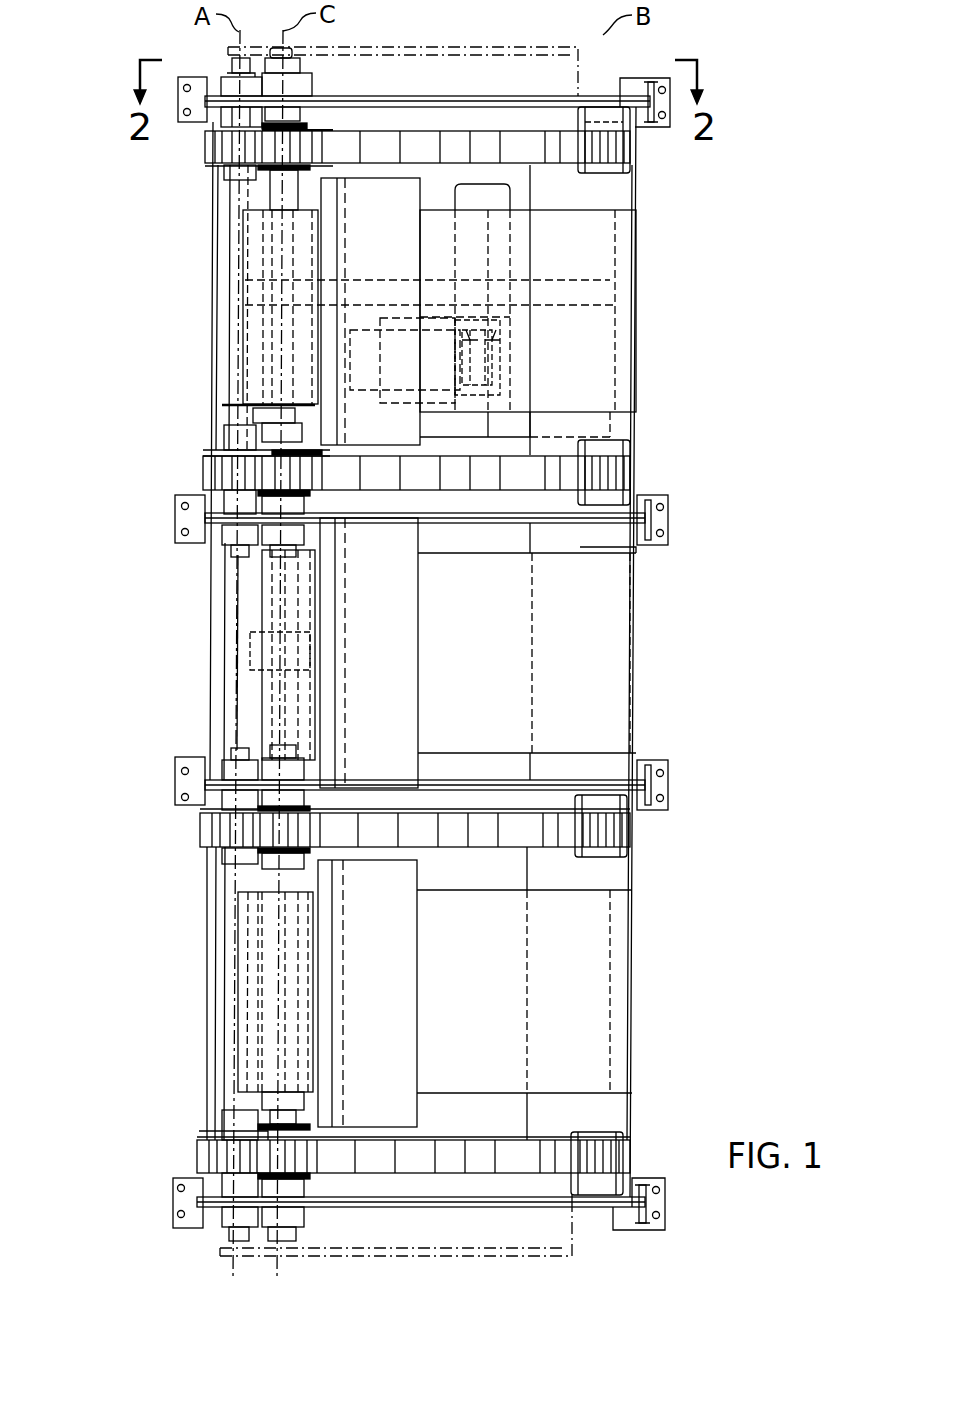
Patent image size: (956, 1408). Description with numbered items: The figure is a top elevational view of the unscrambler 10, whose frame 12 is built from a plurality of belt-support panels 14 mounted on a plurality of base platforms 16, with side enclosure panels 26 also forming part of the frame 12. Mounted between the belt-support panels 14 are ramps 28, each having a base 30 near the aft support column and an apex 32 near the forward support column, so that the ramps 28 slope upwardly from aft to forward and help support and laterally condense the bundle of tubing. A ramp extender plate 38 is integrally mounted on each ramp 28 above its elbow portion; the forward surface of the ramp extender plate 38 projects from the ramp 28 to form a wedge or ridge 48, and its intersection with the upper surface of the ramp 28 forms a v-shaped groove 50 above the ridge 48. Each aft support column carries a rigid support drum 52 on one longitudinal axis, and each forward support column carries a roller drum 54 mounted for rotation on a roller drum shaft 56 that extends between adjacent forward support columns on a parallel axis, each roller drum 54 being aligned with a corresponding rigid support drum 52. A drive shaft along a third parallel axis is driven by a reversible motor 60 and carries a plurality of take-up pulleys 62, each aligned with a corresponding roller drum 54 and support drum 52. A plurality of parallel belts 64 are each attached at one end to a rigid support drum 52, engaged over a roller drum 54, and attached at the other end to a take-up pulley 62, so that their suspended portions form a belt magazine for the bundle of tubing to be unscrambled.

The unscrambler 10 is at (142, 1072).
The frame 12 is at (604, 1241).
The belt-support panel 14 is at (476, 100).
The base platform 16 is at (193, 122).
The side enclosure panel 26 is at (480, 50).
The ramp 28 is at (598, 327).
The base 30 is at (620, 380).
The apex 32 is at (245, 310).
The ramp extender plate 38 is at (399, 259).
The ridge 48 is at (339, 217).
The v-shaped groove 50 is at (322, 367).
The rigid support drum 52 is at (603, 172).
The roller drum 54 is at (222, 182).
The roller drum shaft 56 is at (230, 238).
The reversible motor 60 is at (505, 368).
The take-up pulley 62 is at (303, 104).
The belt 64 is at (400, 137).